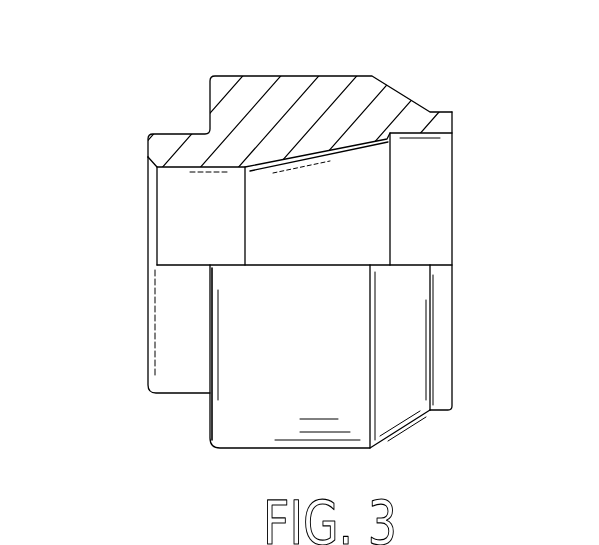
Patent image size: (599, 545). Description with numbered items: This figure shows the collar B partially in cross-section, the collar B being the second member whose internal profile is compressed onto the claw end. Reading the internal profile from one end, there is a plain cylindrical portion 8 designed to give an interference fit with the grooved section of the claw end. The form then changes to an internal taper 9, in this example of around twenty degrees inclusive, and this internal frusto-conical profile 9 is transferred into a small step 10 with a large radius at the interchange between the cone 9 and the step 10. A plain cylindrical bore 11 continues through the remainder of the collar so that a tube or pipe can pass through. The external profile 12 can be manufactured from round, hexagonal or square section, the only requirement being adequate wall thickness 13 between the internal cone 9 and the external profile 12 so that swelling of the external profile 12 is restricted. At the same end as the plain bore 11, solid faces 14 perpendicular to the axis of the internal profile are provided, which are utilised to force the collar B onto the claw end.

The collar B is at (131, 138).
The plain cylindrical portion 8 is at (428, 135).
The internal taper 9 is at (340, 147).
The small step 10 is at (238, 172).
The plain cylindrical bore 11 is at (182, 173).
The external profile 12 is at (303, 450).
The wall thickness 13 is at (318, 108).
The solid faces 14 is at (208, 422).